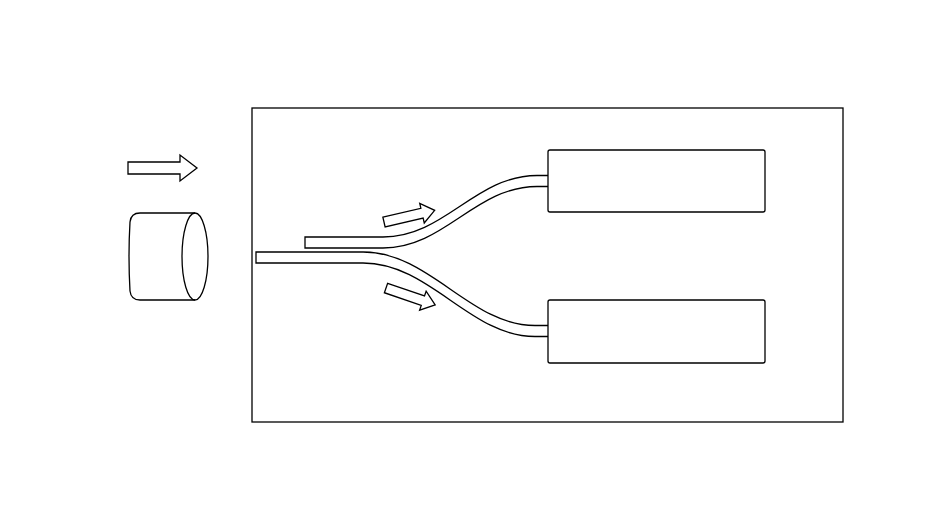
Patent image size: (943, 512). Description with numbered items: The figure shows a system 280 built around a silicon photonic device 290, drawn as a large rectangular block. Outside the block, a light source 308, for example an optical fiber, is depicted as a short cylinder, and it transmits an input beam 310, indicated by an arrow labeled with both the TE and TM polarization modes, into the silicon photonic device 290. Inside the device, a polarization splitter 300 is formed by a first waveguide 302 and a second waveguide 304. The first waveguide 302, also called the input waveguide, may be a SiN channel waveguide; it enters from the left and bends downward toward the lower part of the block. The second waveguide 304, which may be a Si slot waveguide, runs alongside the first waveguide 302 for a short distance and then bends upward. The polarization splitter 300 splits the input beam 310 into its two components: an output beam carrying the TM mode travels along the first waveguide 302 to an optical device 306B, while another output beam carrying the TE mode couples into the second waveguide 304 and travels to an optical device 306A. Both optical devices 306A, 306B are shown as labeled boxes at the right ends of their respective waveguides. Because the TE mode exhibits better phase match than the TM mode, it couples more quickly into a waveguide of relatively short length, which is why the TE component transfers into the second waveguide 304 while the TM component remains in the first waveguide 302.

The system 280 is at (771, 66).
The silicon photonic device 290 is at (790, 108).
The polarization splitter 300 is at (327, 288).
The first waveguide 302 is at (498, 326).
The second waveguide 304 is at (499, 190).
The optical device 306A is at (703, 149).
The optical device 306B is at (703, 299).
The light source 308 is at (129, 257).
The input beam 310 is at (128, 168).